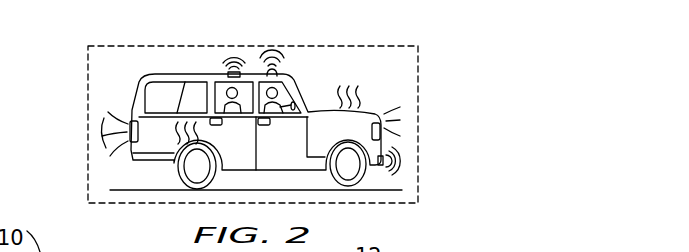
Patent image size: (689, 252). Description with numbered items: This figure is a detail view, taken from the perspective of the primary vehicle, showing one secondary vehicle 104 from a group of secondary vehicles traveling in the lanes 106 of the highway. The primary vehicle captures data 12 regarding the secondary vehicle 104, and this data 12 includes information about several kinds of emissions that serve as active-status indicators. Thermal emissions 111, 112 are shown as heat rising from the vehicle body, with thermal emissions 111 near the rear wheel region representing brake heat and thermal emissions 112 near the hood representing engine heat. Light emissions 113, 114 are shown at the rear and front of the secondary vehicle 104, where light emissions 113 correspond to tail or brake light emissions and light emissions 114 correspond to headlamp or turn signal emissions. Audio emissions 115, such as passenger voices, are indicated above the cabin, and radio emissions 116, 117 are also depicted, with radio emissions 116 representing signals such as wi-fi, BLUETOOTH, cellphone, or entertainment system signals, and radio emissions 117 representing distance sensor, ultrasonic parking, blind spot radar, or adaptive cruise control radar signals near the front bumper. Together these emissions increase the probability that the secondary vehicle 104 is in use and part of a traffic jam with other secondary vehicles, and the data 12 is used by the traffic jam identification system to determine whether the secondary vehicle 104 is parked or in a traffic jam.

The secondary vehicle 104 is at (78, 70).
The data 12 is at (133, 45).
The audio emissions 115 is at (232, 57).
The radio emissions 116 is at (280, 45).
The thermal emissions 112 is at (363, 96).
The thermal emissions 111 is at (173, 138).
The light emissions 113 is at (100, 133).
The light emissions 114 is at (403, 117).
The radio emissions 117 is at (403, 160).
The lanes 106 is at (118, 190).